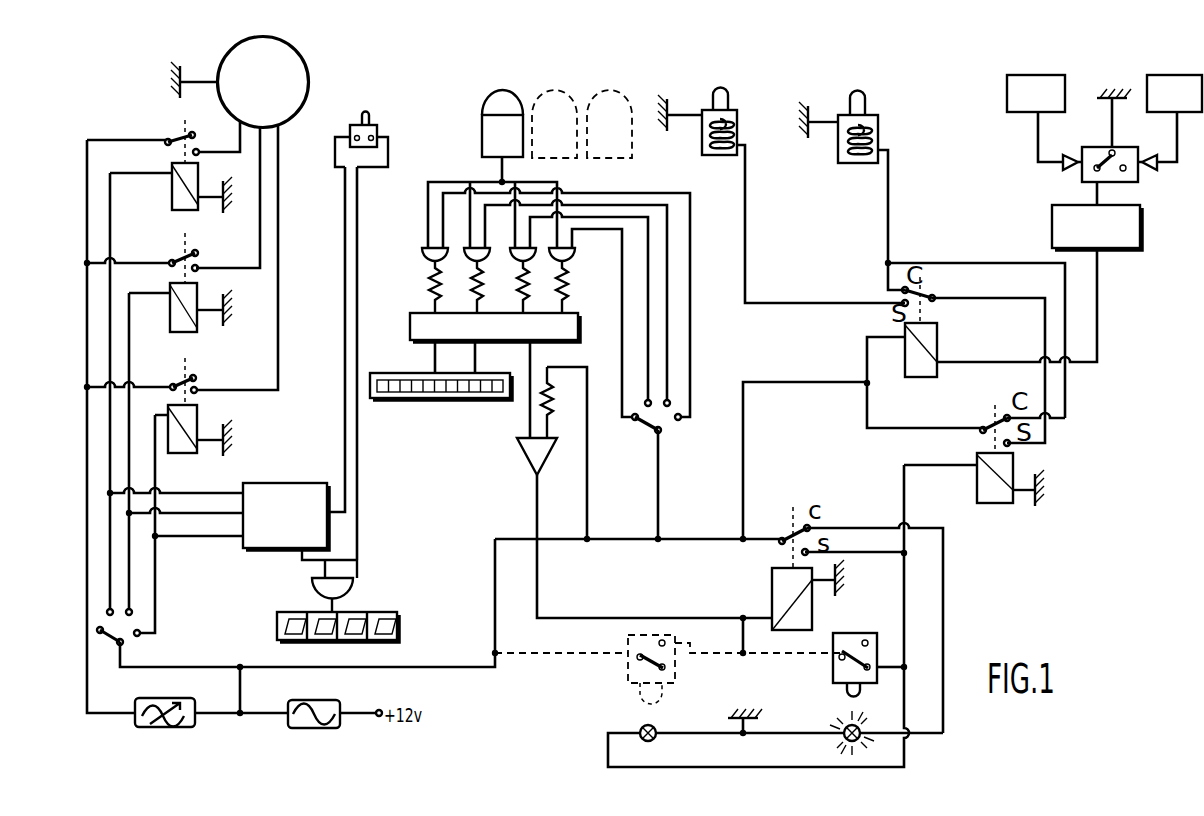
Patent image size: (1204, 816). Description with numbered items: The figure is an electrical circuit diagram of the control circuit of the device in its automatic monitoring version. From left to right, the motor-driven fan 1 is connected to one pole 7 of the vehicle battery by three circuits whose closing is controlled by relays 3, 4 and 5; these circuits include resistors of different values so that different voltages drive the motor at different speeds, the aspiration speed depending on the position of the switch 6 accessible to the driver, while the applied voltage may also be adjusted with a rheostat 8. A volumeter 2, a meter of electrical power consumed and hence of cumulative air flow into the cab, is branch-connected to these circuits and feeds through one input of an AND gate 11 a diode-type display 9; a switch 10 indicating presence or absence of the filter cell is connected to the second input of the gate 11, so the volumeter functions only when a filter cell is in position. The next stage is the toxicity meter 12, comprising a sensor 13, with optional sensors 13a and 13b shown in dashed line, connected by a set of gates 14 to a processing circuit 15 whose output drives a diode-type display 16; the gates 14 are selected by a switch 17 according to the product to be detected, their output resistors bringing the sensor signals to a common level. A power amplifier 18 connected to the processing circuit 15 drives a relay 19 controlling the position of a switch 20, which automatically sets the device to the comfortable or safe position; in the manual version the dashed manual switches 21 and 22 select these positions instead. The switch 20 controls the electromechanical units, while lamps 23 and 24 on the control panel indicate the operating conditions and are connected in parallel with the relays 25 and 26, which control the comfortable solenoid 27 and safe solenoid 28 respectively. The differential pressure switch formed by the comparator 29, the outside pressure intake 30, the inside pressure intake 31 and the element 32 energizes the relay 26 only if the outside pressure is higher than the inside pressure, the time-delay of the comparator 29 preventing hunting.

The motor-driven fan 1 is at (295, 83).
The volumeter 2 is at (286, 516).
The relay 3 is at (190, 183).
The relay 4 is at (190, 296).
The relay 5 is at (192, 421).
The switch 6 is at (127, 641).
The pole of the battery 7 is at (330, 701).
The rheostat 8 is at (185, 697).
The display 9 is at (370, 613).
The switch 10 is at (378, 130).
The AND gate 11 is at (350, 590).
The toxicity meter 12 is at (445, 136).
The sensor 13 is at (502, 97).
The sensor 13a is at (563, 72).
The sensor 13b is at (622, 72).
The gates 14 is at (419, 235).
The processing circuit 15 is at (418, 313).
The display 16 is at (470, 398).
The switch 17 is at (650, 421).
The power amplifier 18 is at (533, 452).
The relay 19 is at (772, 602).
The switch 20 is at (790, 532).
The manual switch 21 is at (628, 642).
The manual switch 22 is at (847, 637).
The lamp 23 is at (642, 727).
The lamp 24 is at (842, 727).
The relay 25 is at (1013, 467).
The relay 26 is at (932, 342).
The comfortable solenoid 27 is at (865, 110).
The safe solenoid 28 is at (727, 93).
The comparator 29 is at (1097, 227).
The outside pressure intake 30 is at (1036, 93).
The inside pressure intake 31 is at (1174, 93).
The differential pressure switch 32 is at (1100, 148).